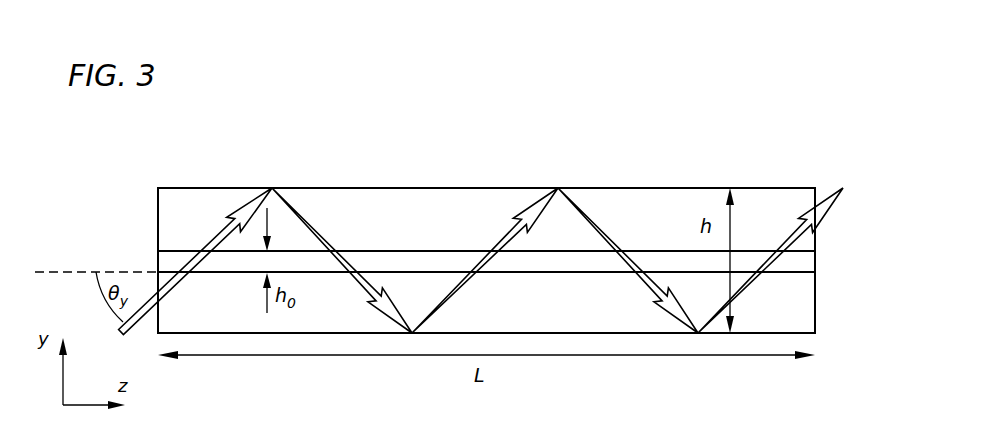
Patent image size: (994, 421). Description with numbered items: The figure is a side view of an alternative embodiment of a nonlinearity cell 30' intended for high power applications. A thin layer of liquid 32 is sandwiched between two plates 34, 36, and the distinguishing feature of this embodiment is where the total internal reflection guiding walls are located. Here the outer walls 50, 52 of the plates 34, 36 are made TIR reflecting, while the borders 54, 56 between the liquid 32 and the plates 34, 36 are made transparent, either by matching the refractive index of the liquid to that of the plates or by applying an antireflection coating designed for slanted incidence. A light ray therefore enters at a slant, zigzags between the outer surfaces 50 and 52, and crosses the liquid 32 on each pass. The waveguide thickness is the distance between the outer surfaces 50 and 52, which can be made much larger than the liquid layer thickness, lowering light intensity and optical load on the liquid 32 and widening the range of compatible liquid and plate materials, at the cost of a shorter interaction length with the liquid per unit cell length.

The nonlinearity cell 30' is at (497, 169).
The liquid 32 is at (662, 256).
The plate 34 is at (191, 198).
The plate 36 is at (228, 315).
The outer wall 50 is at (333, 188).
The outer wall 52 is at (648, 335).
The border 54 is at (412, 251).
The border 56 is at (548, 273).